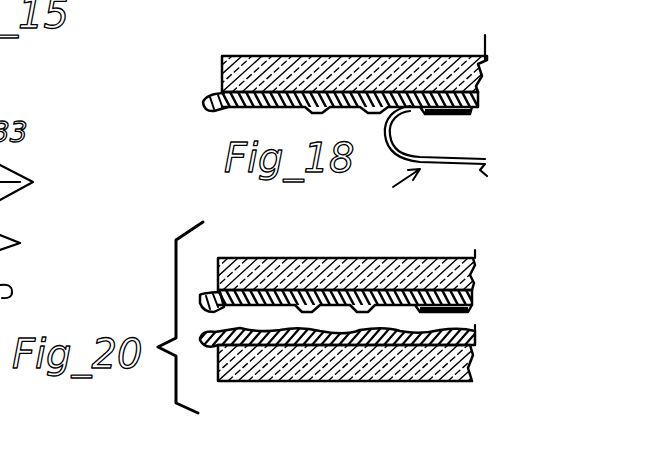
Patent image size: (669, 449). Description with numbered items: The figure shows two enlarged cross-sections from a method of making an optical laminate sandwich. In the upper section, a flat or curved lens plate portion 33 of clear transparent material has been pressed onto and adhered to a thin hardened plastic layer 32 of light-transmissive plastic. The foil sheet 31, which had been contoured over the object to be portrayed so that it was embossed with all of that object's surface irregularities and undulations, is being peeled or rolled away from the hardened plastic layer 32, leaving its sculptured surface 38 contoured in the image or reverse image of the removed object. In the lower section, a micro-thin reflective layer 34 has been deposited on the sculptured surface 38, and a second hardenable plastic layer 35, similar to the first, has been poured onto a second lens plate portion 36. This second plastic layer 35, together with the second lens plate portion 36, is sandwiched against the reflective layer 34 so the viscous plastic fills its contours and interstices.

In FIG. 18, the foil sheet 31 is at (452, 165).
In FIG. 18, the hardened plastic layer 32 is at (440, 100).
In FIG. 20, the hardened plastic layer 32 is at (318, 290).
In FIG. 18, the lens plate portion 33 is at (340, 72).
In FIG. 20, the lens plate portion 33 is at (265, 270).
In FIG. 20, the reflective layer 34 is at (400, 312).
In FIG. 20, the second hardenable plastic layer 35 is at (278, 352).
In FIG. 20, the second lens plate portion 36 is at (385, 360).
In FIG. 18, the sculptured surface 38 is at (245, 112).